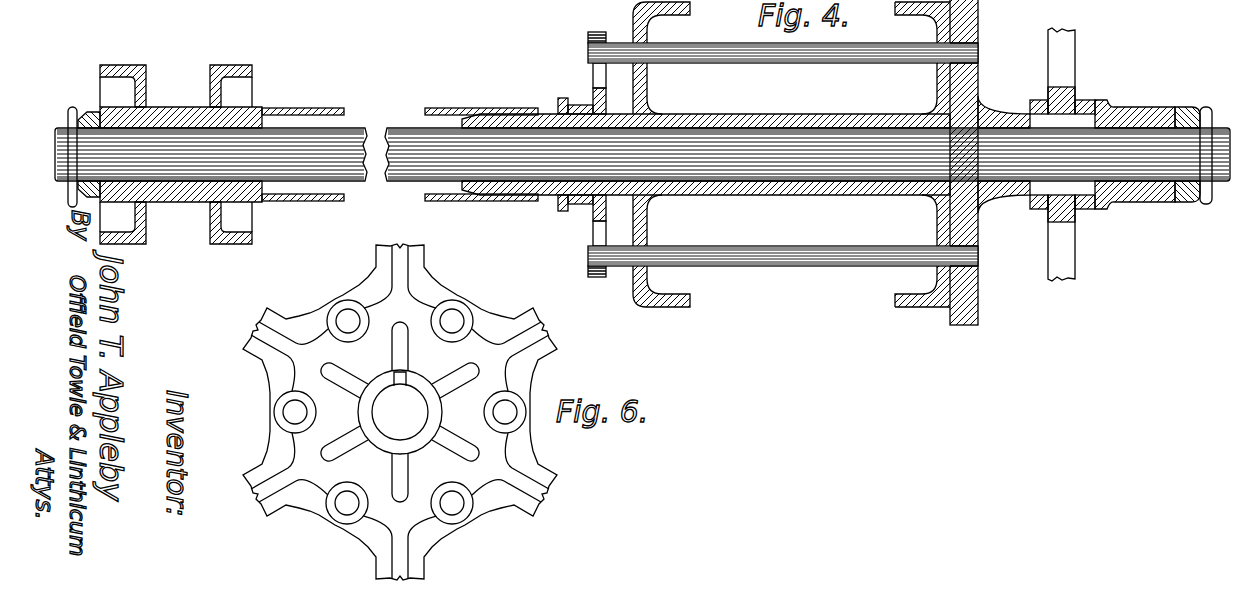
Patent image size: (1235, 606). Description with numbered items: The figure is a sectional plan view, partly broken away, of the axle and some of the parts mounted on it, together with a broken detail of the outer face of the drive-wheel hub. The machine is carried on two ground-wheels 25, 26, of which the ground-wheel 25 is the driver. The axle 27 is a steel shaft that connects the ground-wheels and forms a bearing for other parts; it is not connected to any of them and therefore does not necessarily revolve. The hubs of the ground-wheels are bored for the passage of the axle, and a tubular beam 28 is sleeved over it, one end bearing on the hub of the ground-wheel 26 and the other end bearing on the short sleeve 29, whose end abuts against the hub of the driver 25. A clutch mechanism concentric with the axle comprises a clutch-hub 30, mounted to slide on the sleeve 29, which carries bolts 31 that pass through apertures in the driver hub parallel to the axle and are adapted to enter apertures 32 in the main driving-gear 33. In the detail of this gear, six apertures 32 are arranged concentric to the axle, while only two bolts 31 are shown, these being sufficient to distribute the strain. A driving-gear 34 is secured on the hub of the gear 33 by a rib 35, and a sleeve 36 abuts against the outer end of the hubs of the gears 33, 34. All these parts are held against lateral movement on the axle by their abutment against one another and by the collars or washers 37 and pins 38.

In FIG. 4, the ground-wheel (driver) 25 is at (938, 293).
In FIG. 4, the ground-wheel 26 is at (231, 66).
In FIG. 4, the axle 27 is at (308, 167).
In FIG. 4, the tubular beam 28 is at (302, 109).
In FIG. 4, the short sleeve 29 is at (546, 113).
In FIG. 4, the clutch-hub 30 is at (588, 62).
In FIG. 4, the bolts 31 is at (764, 66).
In FIG. 4, the apertures 32 is at (979, 49).
In FIG. 6, the apertures 32 is at (344, 318).
In FIG. 4, the main driving-gear 33 is at (982, 301).
In FIG. 6, the main driving-gear 33 is at (400, 412).
In FIG. 4, the driving-gear 34 is at (1067, 69).
In FIG. 6, the rib 35 is at (394, 371).
In FIG. 4, the sleeve 36 is at (1141, 115).
In FIG. 4, the collars or washers 37 is at (88, 108).
In FIG. 4, the pins 38 is at (70, 204).